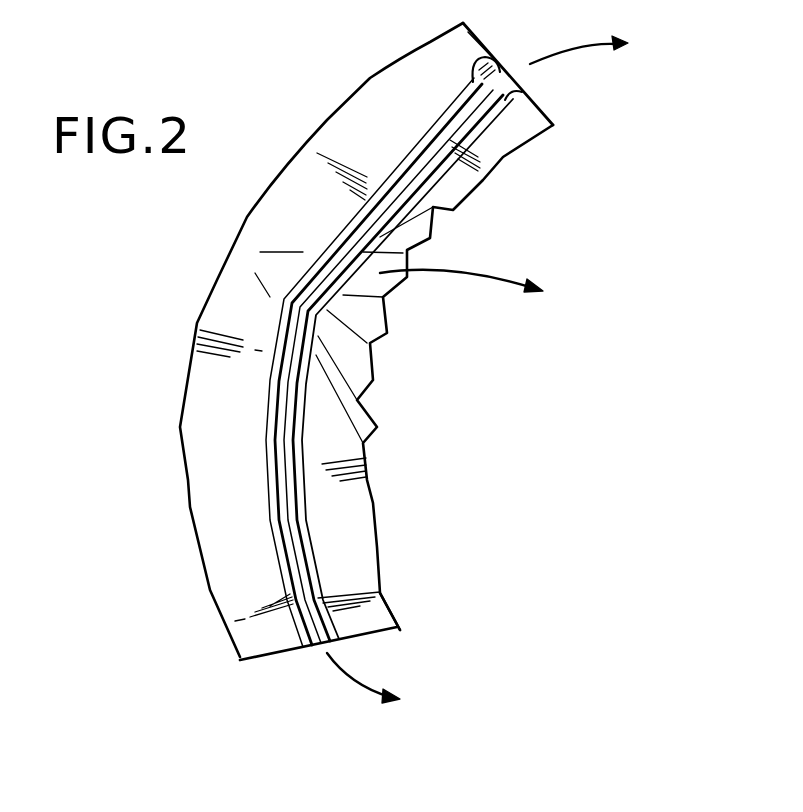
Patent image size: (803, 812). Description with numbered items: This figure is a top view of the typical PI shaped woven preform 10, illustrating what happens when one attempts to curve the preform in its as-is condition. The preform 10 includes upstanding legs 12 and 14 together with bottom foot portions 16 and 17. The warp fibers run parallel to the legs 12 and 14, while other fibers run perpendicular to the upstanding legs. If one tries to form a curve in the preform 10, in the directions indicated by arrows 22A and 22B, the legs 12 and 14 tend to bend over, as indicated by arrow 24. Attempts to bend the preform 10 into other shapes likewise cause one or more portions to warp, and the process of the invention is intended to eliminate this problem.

The PI woven preform 10 is at (585, 394).
The upstanding leg 12 is at (490, 55).
The upstanding leg 14 is at (512, 98).
The bottom foot portion 16 is at (240, 660).
The bottom foot portion 17 is at (397, 627).
The arrow 22A is at (387, 695).
The arrow 22B is at (609, 46).
The arrow 24 is at (475, 299).